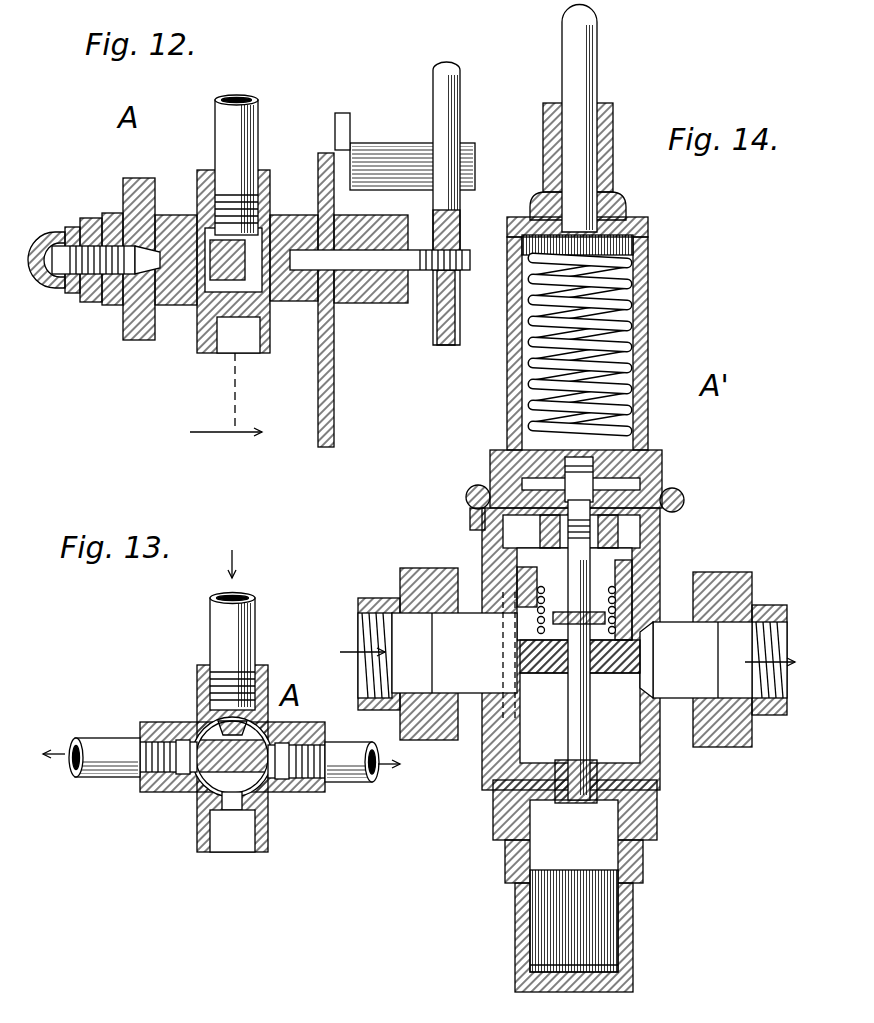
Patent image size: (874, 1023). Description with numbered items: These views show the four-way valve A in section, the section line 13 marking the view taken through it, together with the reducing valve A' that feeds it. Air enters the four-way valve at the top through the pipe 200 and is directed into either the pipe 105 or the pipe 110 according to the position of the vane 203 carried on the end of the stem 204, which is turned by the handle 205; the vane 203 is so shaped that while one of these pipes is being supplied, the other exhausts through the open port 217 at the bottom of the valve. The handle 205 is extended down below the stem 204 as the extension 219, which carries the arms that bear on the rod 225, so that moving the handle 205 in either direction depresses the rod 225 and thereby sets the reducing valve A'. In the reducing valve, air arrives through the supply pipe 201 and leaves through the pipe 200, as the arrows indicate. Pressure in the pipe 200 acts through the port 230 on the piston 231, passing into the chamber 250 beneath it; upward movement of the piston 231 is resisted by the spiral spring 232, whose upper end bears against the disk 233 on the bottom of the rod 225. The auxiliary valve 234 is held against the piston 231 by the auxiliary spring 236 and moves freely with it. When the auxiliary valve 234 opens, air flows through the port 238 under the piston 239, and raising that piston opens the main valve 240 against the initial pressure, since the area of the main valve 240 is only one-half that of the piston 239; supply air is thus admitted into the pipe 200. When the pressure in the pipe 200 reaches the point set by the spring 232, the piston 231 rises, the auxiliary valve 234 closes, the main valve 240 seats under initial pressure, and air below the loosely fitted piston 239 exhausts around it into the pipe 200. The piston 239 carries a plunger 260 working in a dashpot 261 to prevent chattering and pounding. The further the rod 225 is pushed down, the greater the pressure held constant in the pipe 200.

In FIG. 12, the section line of Fig. 12 13 is at (226, 409).
In FIG. 13, the pipe 105 is at (345, 770).
In FIG. 13, the pipe 110 is at (100, 746).
In FIG. 12, the pipe 200 is at (244, 132).
In FIG. 13, the pipe 200 is at (226, 638).
In FIG. 14, the pipe 200 is at (765, 607).
In FIG. 14, the pipe 201 is at (376, 604).
In FIG. 12, the vane 203 is at (187, 306).
In FIG. 13, the vane 203 is at (268, 794).
In FIG. 12, the stem 204 is at (428, 272).
In FIG. 12, the handle 205 is at (460, 99).
In FIG. 12, the open port 217 is at (225, 353).
In FIG. 13, the open port 217 is at (232, 854).
In FIG. 12, the extension 219 is at (447, 346).
In FIG. 14, the rod 225 is at (589, 92).
In FIG. 14, the port 230 is at (648, 556).
In FIG. 14, the piston 231 is at (515, 456).
In FIG. 14, the spiral spring 232 is at (625, 291).
In FIG. 14, the disk 233 is at (620, 244).
In FIG. 14, the auxiliary valve 234 is at (632, 660).
In FIG. 14, the auxiliary spring 236 is at (648, 531).
In FIG. 14, the port 238 is at (520, 580).
In FIG. 14, the piston 239 is at (592, 752).
In FIG. 14, the main valve 240 is at (600, 760).
In FIG. 14, the chamber 250 is at (678, 508).
In FIG. 14, the plunger 260 is at (586, 896).
In FIG. 14, the dashpot 261 is at (625, 942).